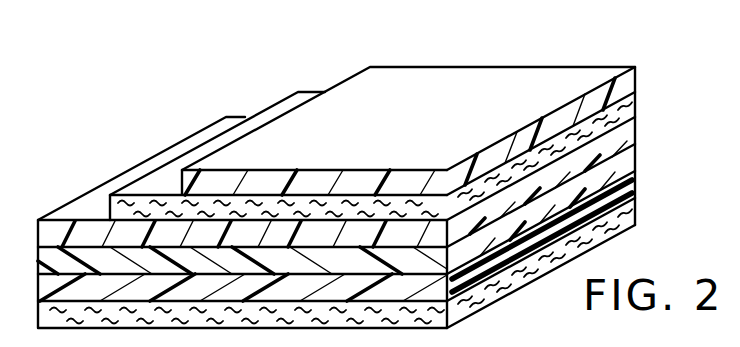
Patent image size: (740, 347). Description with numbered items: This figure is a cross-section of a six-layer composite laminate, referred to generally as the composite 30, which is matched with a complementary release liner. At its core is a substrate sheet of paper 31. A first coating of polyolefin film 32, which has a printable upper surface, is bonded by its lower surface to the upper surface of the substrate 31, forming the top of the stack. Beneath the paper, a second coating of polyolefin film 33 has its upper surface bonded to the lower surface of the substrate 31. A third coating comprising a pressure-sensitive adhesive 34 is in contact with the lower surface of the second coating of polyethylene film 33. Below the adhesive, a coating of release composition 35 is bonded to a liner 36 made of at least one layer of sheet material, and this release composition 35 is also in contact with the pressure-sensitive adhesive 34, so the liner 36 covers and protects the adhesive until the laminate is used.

The composite laminate 30 is at (518, 82).
The substrate sheet of paper 31 is at (623, 103).
The first coating of polyolefin film 32 is at (622, 80).
The second coating of polyolefin film 33 is at (623, 132).
The pressure-sensitive adhesive 34 is at (618, 162).
The coating of release composition 35 is at (632, 185).
The liner 36 is at (623, 218).